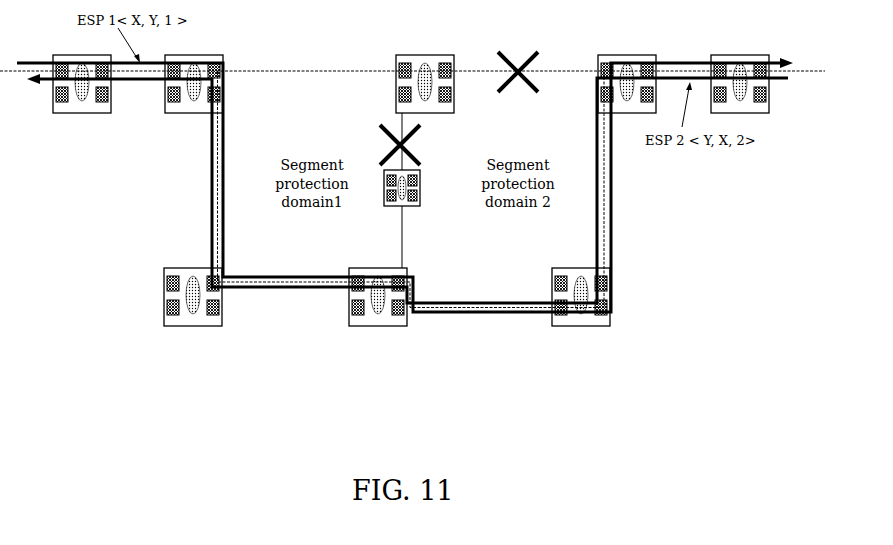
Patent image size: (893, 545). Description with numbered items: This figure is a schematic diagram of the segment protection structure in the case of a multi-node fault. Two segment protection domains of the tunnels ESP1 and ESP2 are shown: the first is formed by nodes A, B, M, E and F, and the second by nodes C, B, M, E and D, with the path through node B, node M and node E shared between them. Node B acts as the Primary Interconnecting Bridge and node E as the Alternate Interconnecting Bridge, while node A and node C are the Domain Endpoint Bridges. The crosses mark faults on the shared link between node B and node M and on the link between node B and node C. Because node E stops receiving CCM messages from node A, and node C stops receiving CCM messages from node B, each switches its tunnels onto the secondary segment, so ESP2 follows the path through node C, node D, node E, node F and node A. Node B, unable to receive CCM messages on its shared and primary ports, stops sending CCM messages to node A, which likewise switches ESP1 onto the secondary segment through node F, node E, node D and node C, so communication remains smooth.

The node A (DEB) A is at (193, 72).
The node B (PIB) B is at (425, 72).
The node C (DEB) C is at (627, 72).
The node D is at (581, 310).
The node E (AIB) E is at (378, 311).
The node F is at (193, 311).
The node M is at (412, 188).